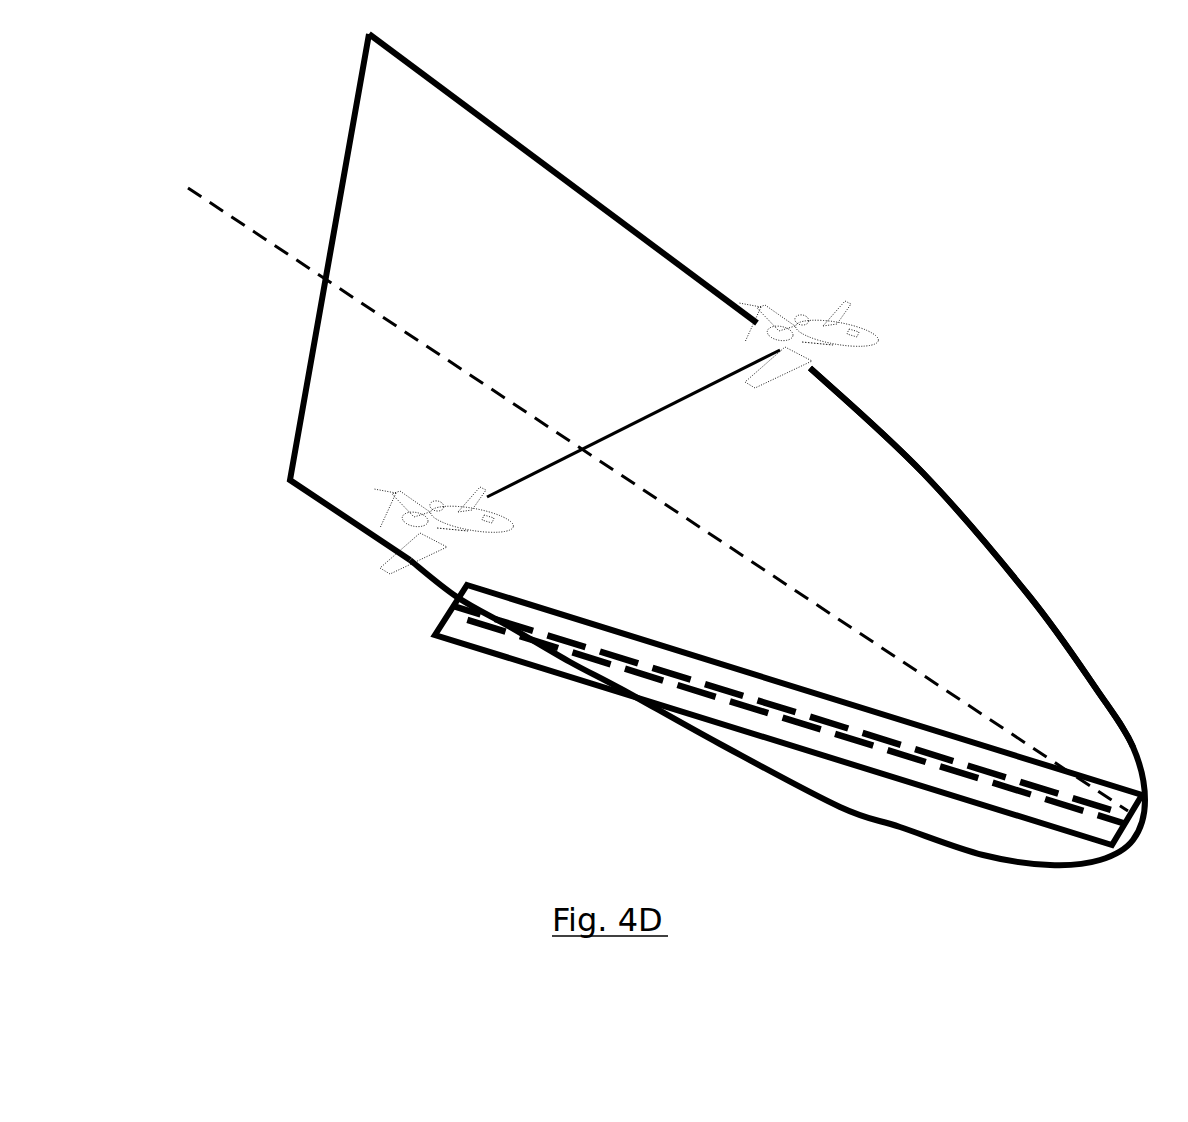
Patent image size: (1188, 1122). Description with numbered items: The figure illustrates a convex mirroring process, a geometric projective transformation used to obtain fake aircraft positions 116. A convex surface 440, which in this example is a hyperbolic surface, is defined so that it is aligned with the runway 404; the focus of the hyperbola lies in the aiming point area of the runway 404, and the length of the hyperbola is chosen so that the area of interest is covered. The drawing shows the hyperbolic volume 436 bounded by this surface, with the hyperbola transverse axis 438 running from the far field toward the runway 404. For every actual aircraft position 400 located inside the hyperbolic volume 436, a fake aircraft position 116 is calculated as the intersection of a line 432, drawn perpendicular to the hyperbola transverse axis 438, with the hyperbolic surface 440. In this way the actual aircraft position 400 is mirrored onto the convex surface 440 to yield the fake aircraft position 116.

The fake aircraft position 116 is at (862, 324).
The actual aircraft position 400 is at (427, 500).
The runway 404 is at (790, 720).
The line 432 is at (650, 415).
The hyperbolic volume 436 is at (1008, 620).
The hyperbola transverse axis 438 is at (450, 367).
The convex surface 440 is at (923, 473).